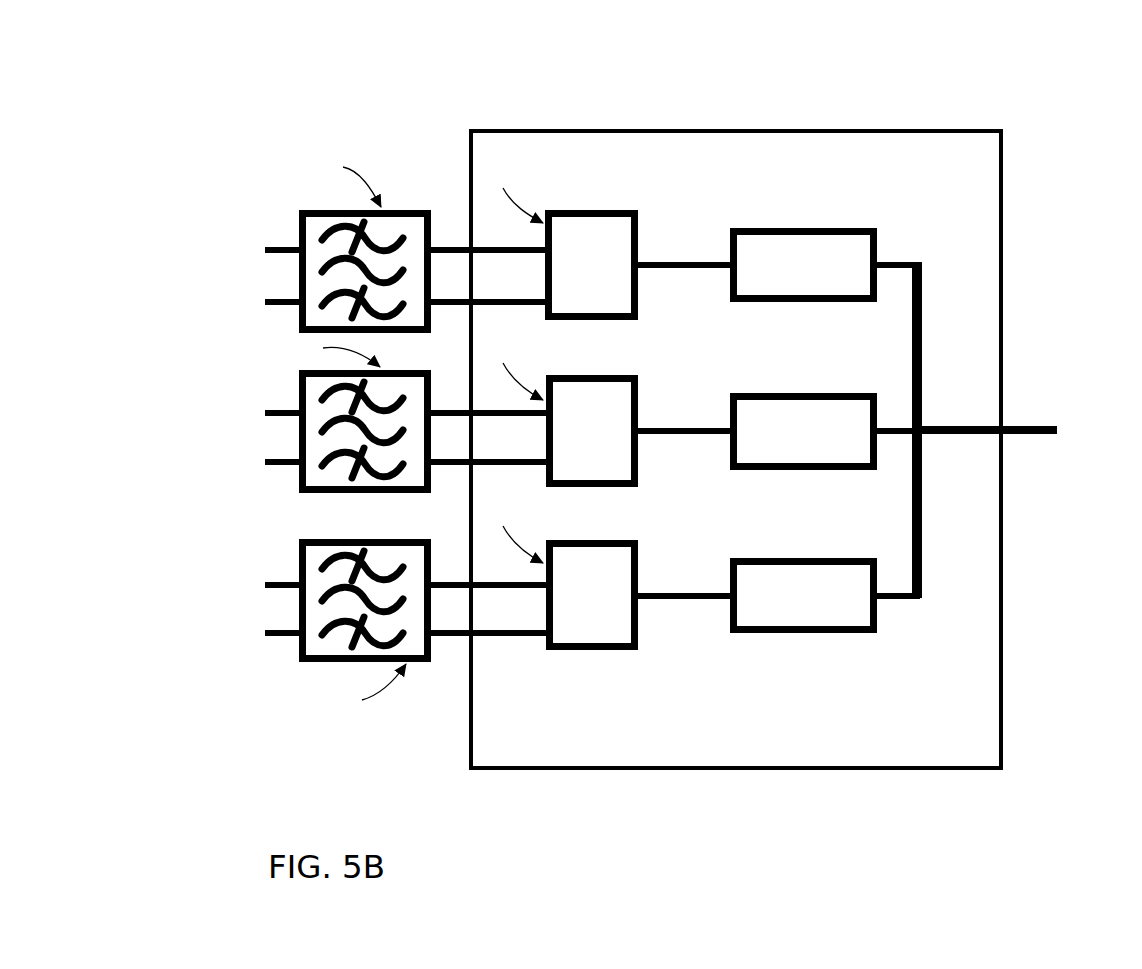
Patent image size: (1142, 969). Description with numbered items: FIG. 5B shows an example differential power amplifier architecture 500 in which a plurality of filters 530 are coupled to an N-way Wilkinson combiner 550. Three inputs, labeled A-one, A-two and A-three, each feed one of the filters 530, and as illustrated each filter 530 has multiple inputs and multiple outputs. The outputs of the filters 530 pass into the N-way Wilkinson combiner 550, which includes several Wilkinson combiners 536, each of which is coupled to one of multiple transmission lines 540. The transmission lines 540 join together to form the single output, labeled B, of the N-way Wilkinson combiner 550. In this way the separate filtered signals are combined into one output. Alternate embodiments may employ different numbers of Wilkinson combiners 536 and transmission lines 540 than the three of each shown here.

The differential power amplifier architecture 500 is at (160, 117).
The filters 530 is at (386, 127).
The Wilkinson combiners 536 is at (610, 111).
The transmission lines 540 is at (803, 111).
The N-way Wilkinson combiner 550 is at (684, 773).